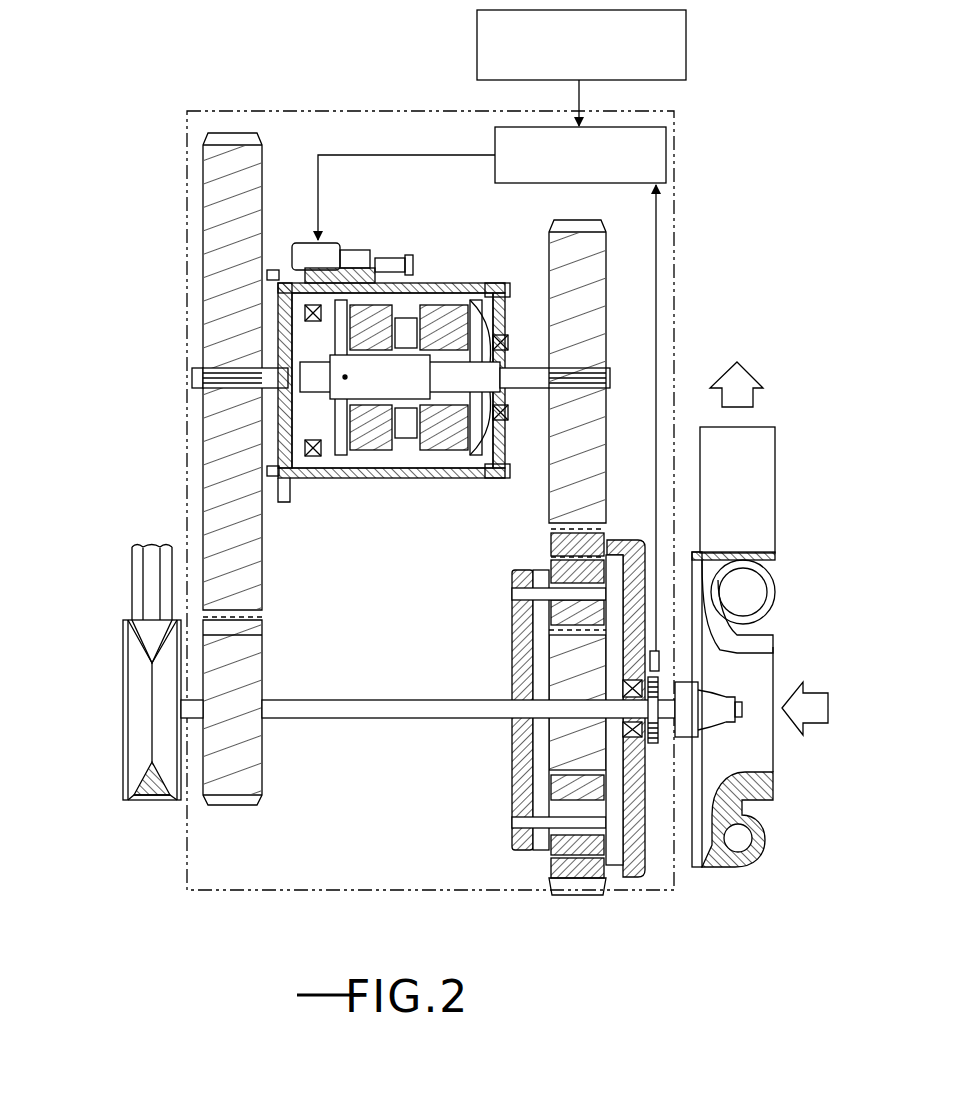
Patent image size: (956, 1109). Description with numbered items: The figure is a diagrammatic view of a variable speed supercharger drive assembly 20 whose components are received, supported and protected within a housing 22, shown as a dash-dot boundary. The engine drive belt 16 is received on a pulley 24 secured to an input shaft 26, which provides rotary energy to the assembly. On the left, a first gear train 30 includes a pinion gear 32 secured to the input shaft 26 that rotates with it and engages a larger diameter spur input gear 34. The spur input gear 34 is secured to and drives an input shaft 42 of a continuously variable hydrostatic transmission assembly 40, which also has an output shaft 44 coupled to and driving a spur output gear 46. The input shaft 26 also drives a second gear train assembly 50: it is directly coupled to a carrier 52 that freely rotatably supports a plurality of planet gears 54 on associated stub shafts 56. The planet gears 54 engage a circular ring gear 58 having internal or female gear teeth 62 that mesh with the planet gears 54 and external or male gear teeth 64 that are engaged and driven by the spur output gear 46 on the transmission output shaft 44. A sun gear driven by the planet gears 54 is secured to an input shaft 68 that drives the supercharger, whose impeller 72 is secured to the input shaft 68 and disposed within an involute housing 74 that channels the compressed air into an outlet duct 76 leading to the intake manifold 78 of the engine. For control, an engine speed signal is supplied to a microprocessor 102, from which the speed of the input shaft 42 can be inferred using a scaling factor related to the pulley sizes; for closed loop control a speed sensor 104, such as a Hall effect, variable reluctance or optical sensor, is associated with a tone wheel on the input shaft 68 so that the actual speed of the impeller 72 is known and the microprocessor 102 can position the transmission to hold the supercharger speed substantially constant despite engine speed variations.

The drive belt 16 is at (114, 604).
The supercharger assembly 20 is at (245, 912).
The housing 22 is at (363, 890).
The pulley 24 is at (136, 745).
The input shaft 26 is at (423, 722).
The first gear train 30 is at (235, 822).
The pinion gear 32 is at (266, 648).
The spur input gear 34 is at (182, 371).
The continuously variable hydrostatic transmission assembly 40 is at (385, 232).
The input shaft 42 is at (195, 387).
The output shaft 44 is at (568, 378).
The spur output gear 46 is at (594, 296).
The second gear train assembly 50 is at (575, 905).
The carrier 52 is at (512, 775).
The planet gears 54 is at (549, 618).
The stub shafts 56 is at (515, 591).
The ring gear 58 is at (630, 872).
The internal gear teeth 62 is at (551, 566).
The external gear teeth 64 is at (551, 526).
The input shaft 68 is at (709, 717).
The impeller 72 is at (733, 660).
The involute housing 74 is at (715, 868).
The outlet duct 76 is at (747, 492).
The intake manifold 78 is at (794, 428).
The microprocessor 102 is at (563, 167).
The speed sensor 104 is at (659, 661).